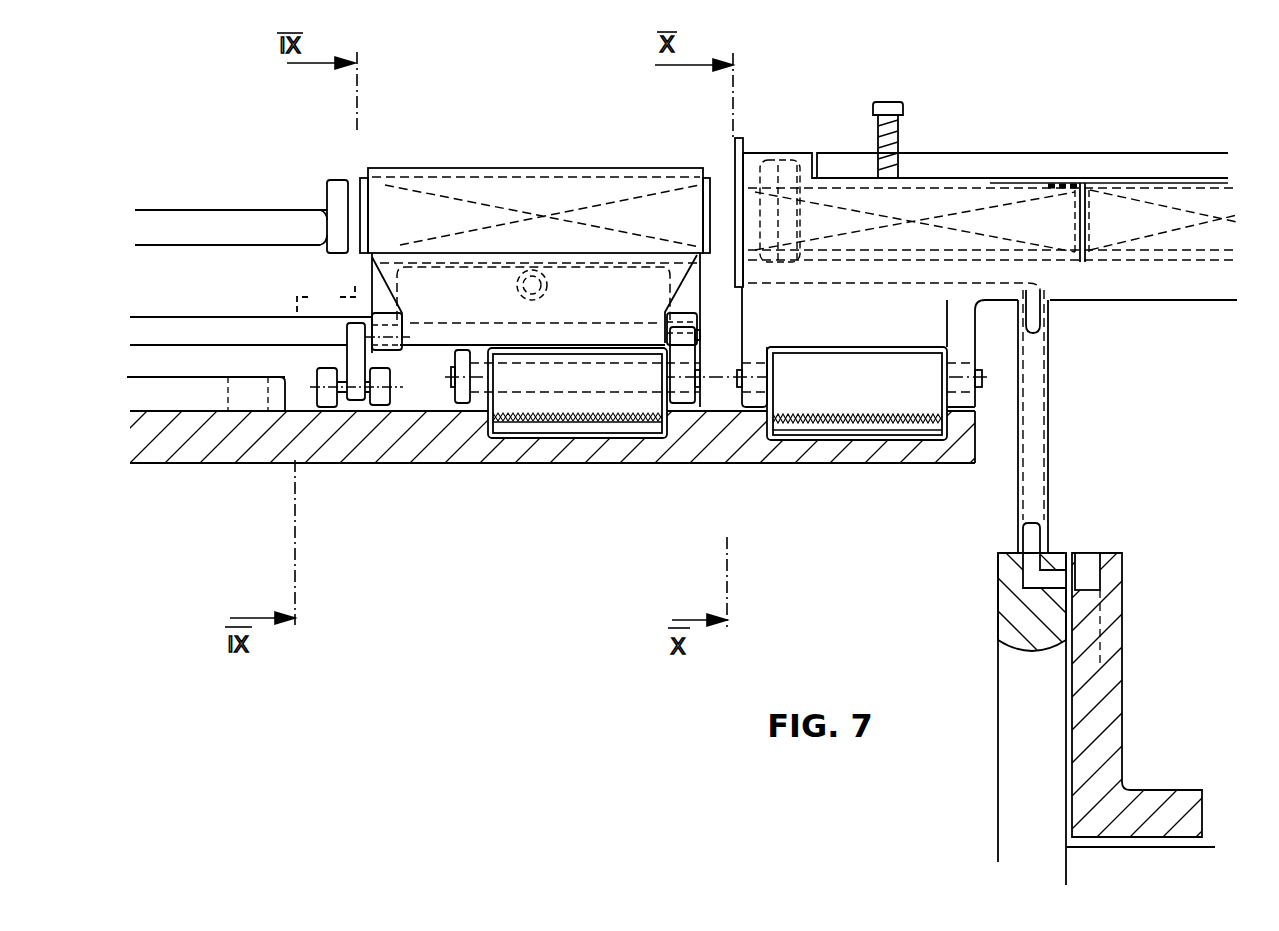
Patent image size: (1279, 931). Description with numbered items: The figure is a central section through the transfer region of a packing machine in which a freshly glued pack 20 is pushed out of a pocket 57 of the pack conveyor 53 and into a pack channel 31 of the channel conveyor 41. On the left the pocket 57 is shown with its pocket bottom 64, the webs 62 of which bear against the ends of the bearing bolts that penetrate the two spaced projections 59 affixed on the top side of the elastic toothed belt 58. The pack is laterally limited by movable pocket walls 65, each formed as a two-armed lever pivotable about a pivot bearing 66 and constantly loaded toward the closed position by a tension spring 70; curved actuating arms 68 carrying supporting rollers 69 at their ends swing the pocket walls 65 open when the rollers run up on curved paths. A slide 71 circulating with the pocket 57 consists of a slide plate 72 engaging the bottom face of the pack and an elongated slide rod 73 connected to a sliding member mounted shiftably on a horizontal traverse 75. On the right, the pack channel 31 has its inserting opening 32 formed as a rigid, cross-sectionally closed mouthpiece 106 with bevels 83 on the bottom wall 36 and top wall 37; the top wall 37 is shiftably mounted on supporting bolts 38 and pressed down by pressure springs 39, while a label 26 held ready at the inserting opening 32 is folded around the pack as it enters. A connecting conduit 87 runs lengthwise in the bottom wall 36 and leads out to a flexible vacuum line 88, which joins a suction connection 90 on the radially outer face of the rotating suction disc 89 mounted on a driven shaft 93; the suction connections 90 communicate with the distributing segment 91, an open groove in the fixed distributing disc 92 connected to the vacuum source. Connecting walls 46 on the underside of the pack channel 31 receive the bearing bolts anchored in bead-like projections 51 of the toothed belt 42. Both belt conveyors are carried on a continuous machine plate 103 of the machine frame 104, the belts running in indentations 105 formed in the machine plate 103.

The slide 71 is at (185, 170).
The slide rod 73 is at (208, 218).
The slide plate 72 is at (335, 180).
The pocket walls 65 is at (392, 200).
The pocket bottom 64 is at (445, 263).
The pockets 57 is at (477, 152).
The pack conveyor 53 is at (531, 114).
The tension spring 70 is at (525, 277).
The pack 20 is at (722, 190).
The label 26 is at (740, 137).
The bevels 83 is at (757, 157).
The mouthpiece 106 is at (777, 150).
The supporting bolts 38 is at (890, 104).
The pressure springs 39 is at (903, 127).
The pack channel 31 is at (984, 118).
The connecting conduit 87 is at (950, 277).
The top wall 37 is at (1090, 167).
The inserting opening 32 is at (748, 260).
The connecting walls 46 is at (842, 334).
The bottom wall 36 is at (1175, 287).
The traverse 75 is at (175, 332).
The machine plate 103 is at (247, 450).
The supporting rollers 69 is at (327, 402).
The actuating arms 68 is at (353, 400).
The pivot bearing 66 is at (400, 353).
The webs 62 is at (463, 400).
The indentations 105 is at (542, 438).
The projections 59 is at (600, 397).
The toothed belt 58 is at (627, 427).
The channel conveyor 41 is at (788, 482).
The bead-like projections 51 is at (907, 405).
The toothed belt 42 is at (933, 428).
The vacuum line 88 is at (1052, 440).
The distributing segment 91 is at (1087, 577).
The suction connections 90 is at (1035, 543).
The suction disc 89 is at (998, 613).
The distributing disc 92 is at (1117, 705).
The shaft 93 is at (1107, 863).
The machine frame 104 is at (366, 596).